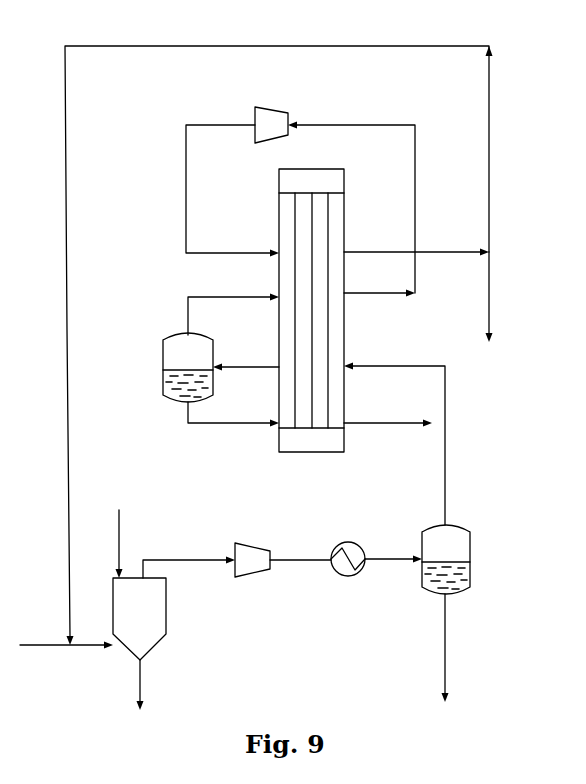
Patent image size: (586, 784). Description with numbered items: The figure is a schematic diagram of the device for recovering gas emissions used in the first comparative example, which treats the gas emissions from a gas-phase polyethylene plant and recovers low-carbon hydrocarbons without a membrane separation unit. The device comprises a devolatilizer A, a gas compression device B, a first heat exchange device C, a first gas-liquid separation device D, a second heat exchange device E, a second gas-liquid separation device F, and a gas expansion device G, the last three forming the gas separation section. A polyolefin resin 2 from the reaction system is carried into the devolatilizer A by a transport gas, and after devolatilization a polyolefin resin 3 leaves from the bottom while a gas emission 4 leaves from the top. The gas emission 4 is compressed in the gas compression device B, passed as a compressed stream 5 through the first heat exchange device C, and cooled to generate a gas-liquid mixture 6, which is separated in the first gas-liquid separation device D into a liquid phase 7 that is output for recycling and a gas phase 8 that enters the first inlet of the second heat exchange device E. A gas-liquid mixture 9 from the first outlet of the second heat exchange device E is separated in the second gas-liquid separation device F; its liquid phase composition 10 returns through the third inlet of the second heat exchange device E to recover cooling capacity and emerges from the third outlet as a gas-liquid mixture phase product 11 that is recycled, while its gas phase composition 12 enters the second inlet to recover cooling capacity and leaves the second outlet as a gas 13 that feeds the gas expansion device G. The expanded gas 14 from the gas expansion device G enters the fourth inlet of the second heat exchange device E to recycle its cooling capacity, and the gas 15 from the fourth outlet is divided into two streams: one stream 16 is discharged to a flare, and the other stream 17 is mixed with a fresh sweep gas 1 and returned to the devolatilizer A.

The fresh sweep gas 1 is at (57, 645).
The polyolefin resin 2 is at (119, 520).
The polyolefin resin 3 is at (140, 692).
The gas emission 4 is at (190, 560).
The compressed stream 5 is at (313, 560).
The gas-liquid mixture 6 is at (405, 559).
The liquid phase 7 is at (445, 666).
The gas phase 8 is at (445, 482).
The gas-liquid mixture 9 is at (261, 367).
The liquid phase composition 10 is at (262, 423).
The gas-liquid mixture phase product 11 is at (408, 423).
The gas phase composition 12 is at (250, 297).
The gas 13 is at (400, 293).
The gas 14 is at (250, 253).
The gas 15 is at (480, 252).
The stream 16 is at (485, 312).
The stream 17 is at (313, 46).
The devolatilizer A is at (166, 610).
The gas compression device B is at (248, 543).
The first heat exchange device C is at (345, 542).
The first gas-liquid separation device D is at (470, 548).
The second heat exchange device E is at (344, 353).
The second gas-liquid separation device F is at (163, 345).
The gas expansion device G is at (273, 141).